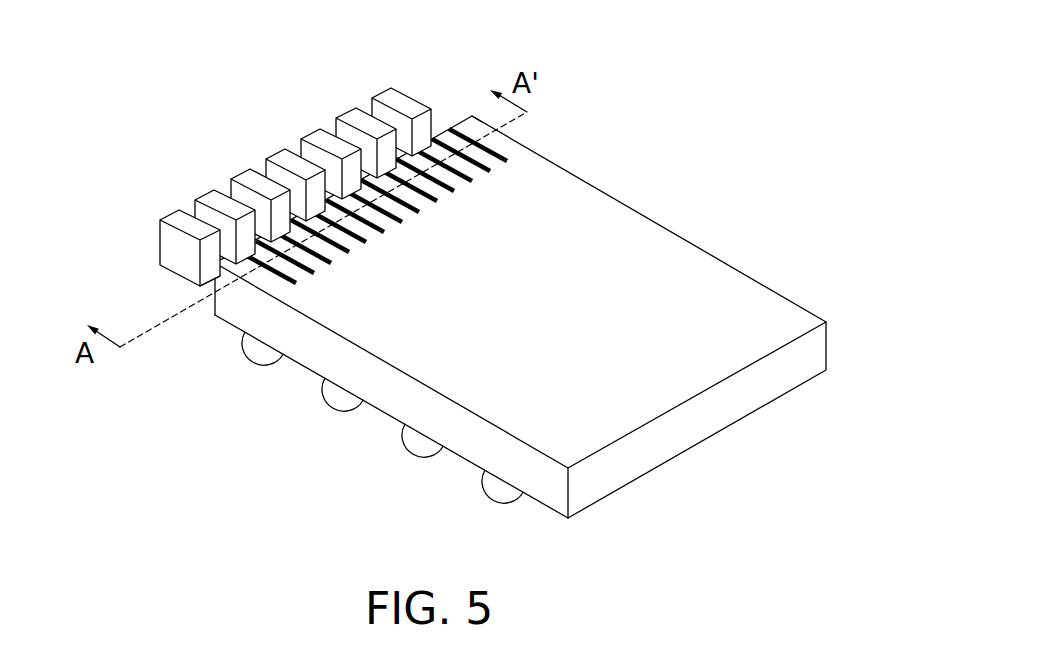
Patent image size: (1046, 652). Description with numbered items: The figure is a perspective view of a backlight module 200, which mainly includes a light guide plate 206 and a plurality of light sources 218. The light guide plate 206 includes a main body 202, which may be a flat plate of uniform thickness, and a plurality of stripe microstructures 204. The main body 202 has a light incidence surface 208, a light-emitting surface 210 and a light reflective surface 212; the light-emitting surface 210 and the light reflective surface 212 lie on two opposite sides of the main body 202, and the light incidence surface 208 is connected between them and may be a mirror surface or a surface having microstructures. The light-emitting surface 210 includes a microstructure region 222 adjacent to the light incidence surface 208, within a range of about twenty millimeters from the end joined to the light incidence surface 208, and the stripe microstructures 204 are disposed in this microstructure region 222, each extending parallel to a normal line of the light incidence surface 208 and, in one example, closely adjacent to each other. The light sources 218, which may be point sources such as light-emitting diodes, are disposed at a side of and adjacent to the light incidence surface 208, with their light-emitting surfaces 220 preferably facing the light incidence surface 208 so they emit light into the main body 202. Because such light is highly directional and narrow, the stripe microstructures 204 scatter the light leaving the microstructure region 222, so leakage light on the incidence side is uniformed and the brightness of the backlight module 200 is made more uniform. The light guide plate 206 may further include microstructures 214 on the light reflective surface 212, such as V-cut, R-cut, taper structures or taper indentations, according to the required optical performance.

The backlight module 200 is at (444, 299).
The main body 202 is at (520, 303).
The stripe microstructures 204 is at (413, 186).
The light guide plate 206 is at (520, 272).
The light incidence surface 208 is at (350, 182).
The light-emitting surface 210 is at (662, 297).
The light reflective surface 212 is at (390, 418).
The microstructures 214 is at (513, 512).
The light sources 218 is at (167, 245).
The light-emitting surfaces of the light sources 220 is at (204, 282).
The microstructure region 222 is at (477, 131).